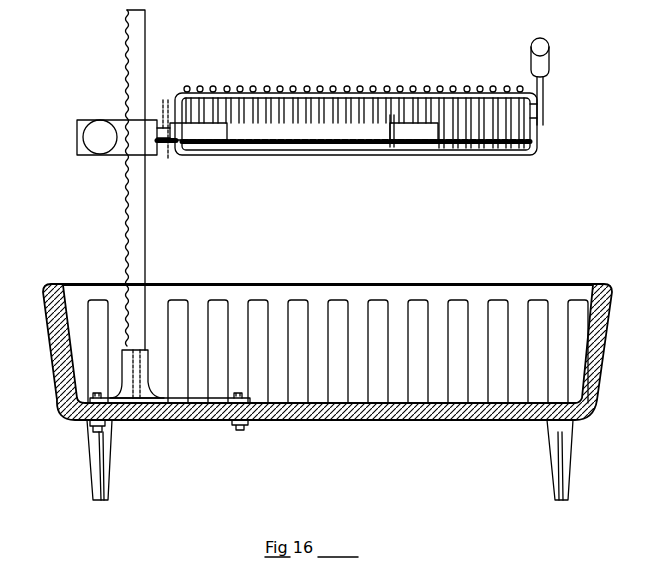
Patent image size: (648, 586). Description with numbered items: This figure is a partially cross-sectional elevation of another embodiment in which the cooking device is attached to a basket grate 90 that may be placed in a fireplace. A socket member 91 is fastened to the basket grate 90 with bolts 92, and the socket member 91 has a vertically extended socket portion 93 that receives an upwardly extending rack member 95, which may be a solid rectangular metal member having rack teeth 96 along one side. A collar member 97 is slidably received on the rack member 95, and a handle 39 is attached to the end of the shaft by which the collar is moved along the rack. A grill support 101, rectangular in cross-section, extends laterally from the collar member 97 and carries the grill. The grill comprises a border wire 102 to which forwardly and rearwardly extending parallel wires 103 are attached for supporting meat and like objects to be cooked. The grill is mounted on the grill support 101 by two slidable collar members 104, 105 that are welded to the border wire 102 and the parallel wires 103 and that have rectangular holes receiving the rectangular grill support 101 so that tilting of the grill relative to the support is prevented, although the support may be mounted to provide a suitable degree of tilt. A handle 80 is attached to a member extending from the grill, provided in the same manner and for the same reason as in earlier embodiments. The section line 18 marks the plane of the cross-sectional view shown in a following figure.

The section line 18- 18 is at (167, 83).
The handle 39 is at (101, 122).
The handle 80 is at (610, 32).
The basket grate 90 is at (355, 422).
The socket member 91 is at (173, 425).
The bolts 92 is at (106, 431).
The socket portion 93 is at (150, 368).
The rack member 95 is at (145, 220).
The rack teeth 96 is at (127, 46).
The collar member 97 is at (150, 152).
The grill support 101 is at (165, 120).
The border wire 102 is at (331, 90).
The parallel wires 103 is at (425, 86).
The slidable collar member 104 is at (203, 131).
The slidable collar member 105 is at (392, 142).